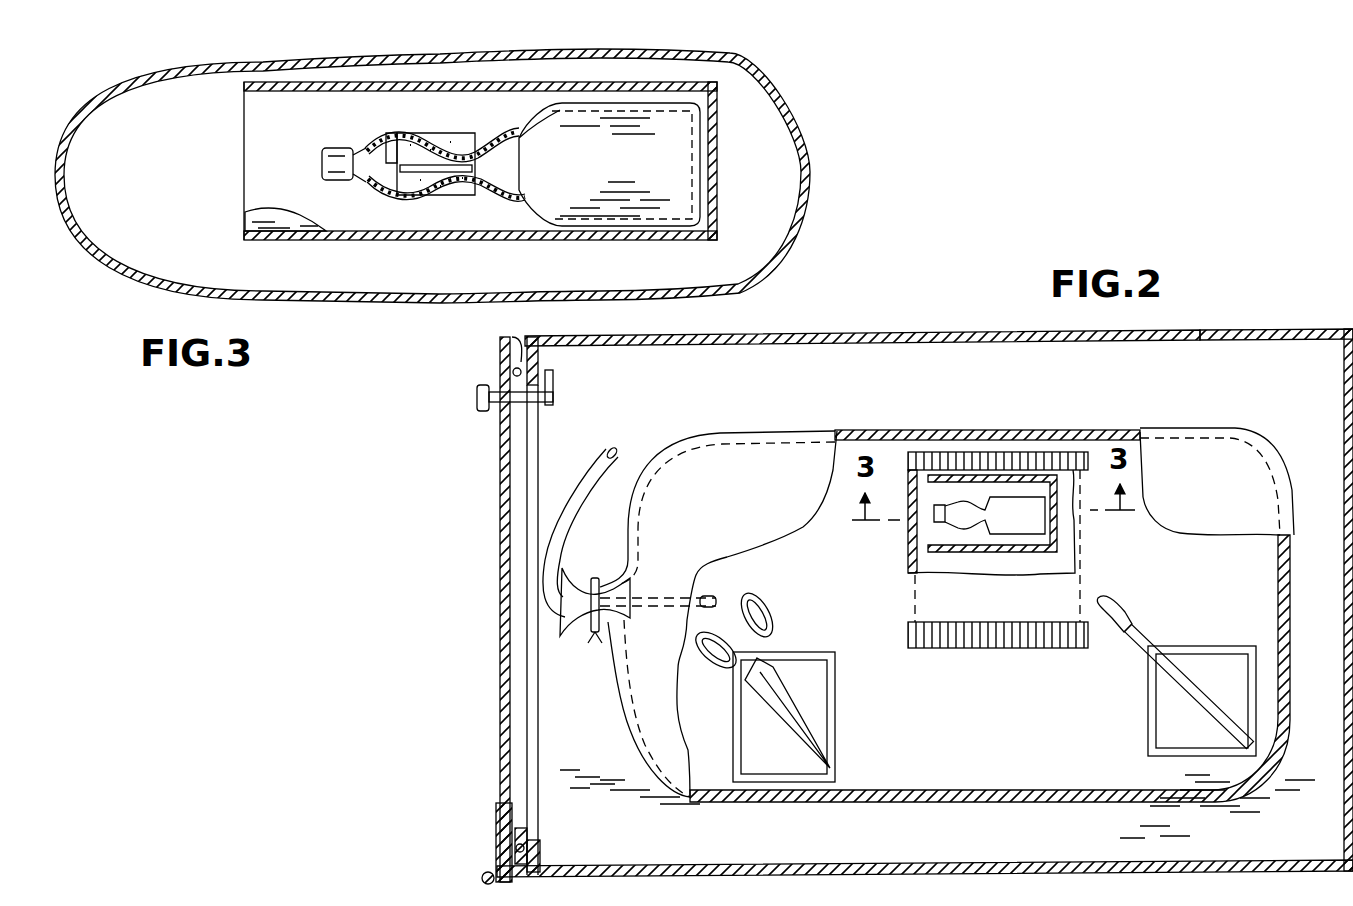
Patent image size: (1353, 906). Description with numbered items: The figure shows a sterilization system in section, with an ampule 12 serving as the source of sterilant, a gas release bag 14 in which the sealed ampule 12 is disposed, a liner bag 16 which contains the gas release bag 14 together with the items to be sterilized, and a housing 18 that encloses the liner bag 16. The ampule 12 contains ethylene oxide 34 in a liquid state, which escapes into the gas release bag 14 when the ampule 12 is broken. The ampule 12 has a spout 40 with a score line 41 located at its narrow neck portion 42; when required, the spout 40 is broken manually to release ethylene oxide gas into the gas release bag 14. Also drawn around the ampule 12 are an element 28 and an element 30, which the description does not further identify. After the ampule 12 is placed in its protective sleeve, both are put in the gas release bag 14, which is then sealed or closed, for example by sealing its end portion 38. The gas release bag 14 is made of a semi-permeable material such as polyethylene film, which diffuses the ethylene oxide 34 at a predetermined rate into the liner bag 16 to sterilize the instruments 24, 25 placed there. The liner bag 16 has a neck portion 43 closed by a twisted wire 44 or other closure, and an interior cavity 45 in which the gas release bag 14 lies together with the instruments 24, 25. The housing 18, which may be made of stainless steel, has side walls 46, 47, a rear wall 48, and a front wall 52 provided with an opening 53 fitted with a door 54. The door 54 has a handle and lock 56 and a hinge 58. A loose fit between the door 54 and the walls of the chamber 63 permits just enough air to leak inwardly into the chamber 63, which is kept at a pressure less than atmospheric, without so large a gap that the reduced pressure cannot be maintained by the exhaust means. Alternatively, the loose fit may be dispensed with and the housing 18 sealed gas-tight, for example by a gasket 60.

In FIG. 3, the ampule 12 is at (676, 160).
In FIG. 3, the gas release bag 14 is at (808, 192).
In FIG. 2, the gas release bag 14 is at (924, 608).
In FIG. 2, the liner bag 16 is at (1210, 455).
In FIG. 2, the housing 18 is at (936, 330).
In FIG. 2, the instrument 24 is at (775, 642).
In FIG. 2, the instrument 25 is at (1155, 644).
In FIG. 3, the sleeve 28 is at (432, 150).
In FIG. 3, the closure 30 is at (398, 140).
In FIG. 2, the closure 30 is at (940, 460).
In FIG. 3, the ethylene oxide 34 is at (650, 216).
In FIG. 2, the end portion 38 is at (942, 650).
In FIG. 3, the spout 40 is at (380, 142).
In FIG. 3, the score line 41 is at (517, 124).
In FIG. 3, the narrow neck portion 42 is at (478, 190).
In FIG. 2, the neck portion 43 is at (572, 640).
In FIG. 2, the twisted wire 44 is at (596, 580).
In FIG. 2, the interior cavity 45 is at (982, 774).
In FIG. 2, the side wall 46 is at (688, 868).
In FIG. 2, the side wall 47 is at (1246, 330).
In FIG. 2, the rear wall 48 is at (1352, 306).
In FIG. 2, the front wall 52 is at (540, 862).
In FIG. 2, the opening 53 is at (532, 828).
In FIG. 2, the door 54 is at (500, 706).
In FIG. 2, the handle and lock 56 is at (476, 398).
In FIG. 2, the hinge 58 is at (486, 876).
In FIG. 2, the gasket 60 is at (513, 340).
In FIG. 2, the chamber 63 is at (770, 398).